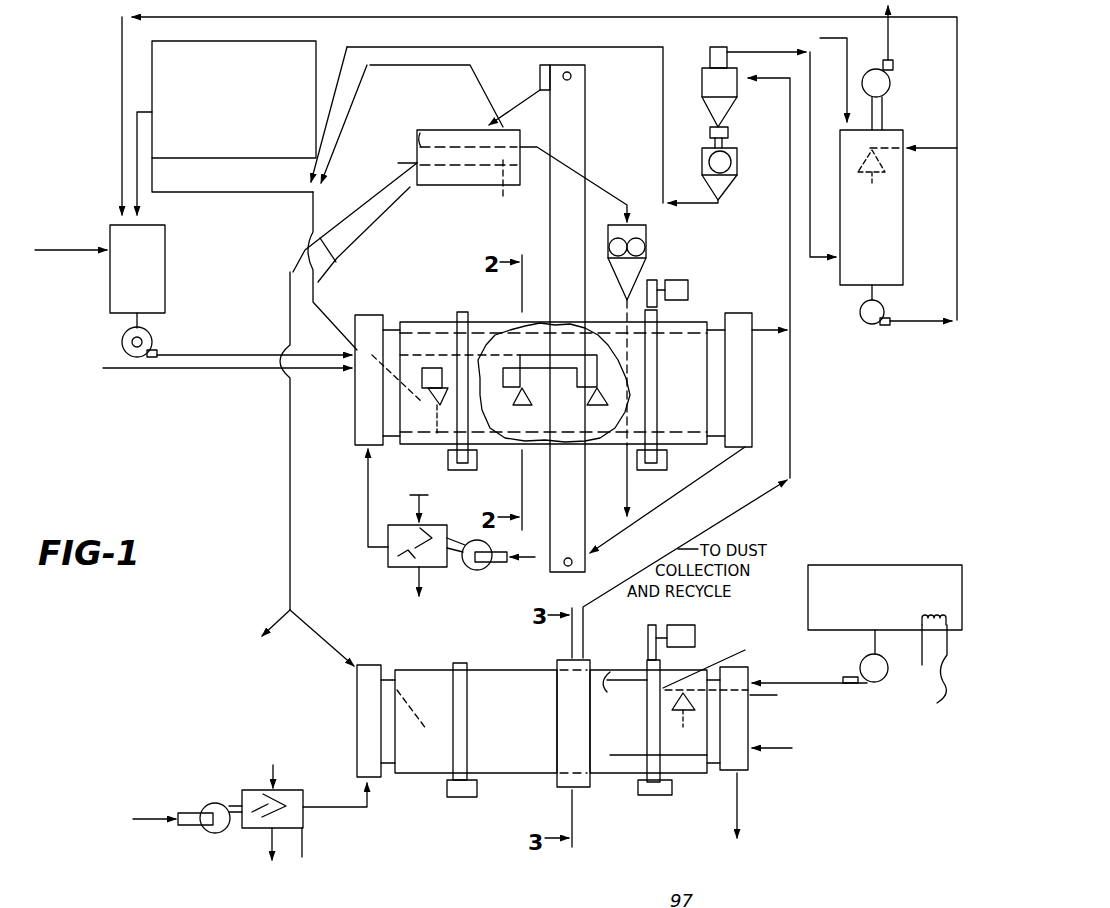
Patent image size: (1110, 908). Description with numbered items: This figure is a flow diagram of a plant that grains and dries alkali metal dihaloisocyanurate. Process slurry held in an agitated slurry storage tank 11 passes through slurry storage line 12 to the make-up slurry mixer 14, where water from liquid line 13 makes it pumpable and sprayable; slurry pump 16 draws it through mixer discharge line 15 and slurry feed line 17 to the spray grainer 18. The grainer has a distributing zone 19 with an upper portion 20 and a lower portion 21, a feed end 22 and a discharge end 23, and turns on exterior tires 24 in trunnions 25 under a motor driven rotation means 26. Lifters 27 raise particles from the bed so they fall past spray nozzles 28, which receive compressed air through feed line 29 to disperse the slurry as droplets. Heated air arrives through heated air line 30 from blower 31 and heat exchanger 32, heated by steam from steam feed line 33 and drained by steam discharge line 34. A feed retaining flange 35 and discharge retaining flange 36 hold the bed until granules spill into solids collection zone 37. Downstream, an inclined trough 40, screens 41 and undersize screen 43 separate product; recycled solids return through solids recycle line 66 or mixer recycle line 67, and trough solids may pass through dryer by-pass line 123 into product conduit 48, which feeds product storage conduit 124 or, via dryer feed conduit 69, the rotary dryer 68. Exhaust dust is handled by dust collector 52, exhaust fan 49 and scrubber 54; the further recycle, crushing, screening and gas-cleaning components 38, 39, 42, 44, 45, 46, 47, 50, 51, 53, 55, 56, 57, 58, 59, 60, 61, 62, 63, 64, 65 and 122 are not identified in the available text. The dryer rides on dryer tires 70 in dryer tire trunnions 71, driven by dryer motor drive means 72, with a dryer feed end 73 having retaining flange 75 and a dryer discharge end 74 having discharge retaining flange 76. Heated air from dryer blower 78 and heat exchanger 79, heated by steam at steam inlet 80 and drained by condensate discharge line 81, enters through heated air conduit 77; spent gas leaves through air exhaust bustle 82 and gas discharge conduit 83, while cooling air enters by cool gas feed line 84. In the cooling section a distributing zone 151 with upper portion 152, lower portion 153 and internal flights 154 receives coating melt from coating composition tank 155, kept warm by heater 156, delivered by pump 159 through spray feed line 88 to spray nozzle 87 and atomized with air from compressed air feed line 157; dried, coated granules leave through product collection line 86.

The agitated slurry storage tank 11 is at (187, 159).
The slurry storage line 12 is at (128, 118).
The liquid line 13 is at (72, 258).
The make-up slurry mixer 14 is at (140, 279).
The mixer discharge line 15 is at (132, 320).
The slurry pump 16 is at (153, 332).
The slurry feed line 17 is at (228, 352).
The spray grainer 18 is at (500, 322).
The distributing zone 19 is at (423, 325).
The upper portion 20 is at (585, 342).
The lower portion 21 is at (580, 447).
The feed end 22 is at (355, 432).
The discharge end 23 is at (752, 405).
The exterior tires 24 is at (463, 312).
The trunnions 25 is at (470, 470).
The motor driven rotation means 26 is at (688, 280).
The lifters 27 is at (410, 305).
The spray nozzles 28 is at (590, 400).
The compressed air or gas feed line 29 is at (304, 378).
The heated air line 30 is at (366, 516).
The blower 31 is at (470, 570).
The heat exchanger 32 is at (388, 567).
The steam feed line 33 is at (415, 500).
The steam discharge line 34 is at (418, 590).
The feed retaining flange 35 is at (425, 398).
The discharge retaining flange 36 is at (700, 432).
The solids collection zone 37 is at (740, 443).
The exhaust gas duct 38 is at (712, 474).
The discharge chute 39 is at (573, 520).
The inclined trough 40 is at (525, 98).
The screens 41 is at (446, 130).
The hopper inlet 42 is at (420, 132).
The undersize screen 43 is at (515, 189).
The feed conduit 44 is at (605, 183).
The feed rolls 45 is at (646, 236).
The feed discharge line 46 is at (627, 483).
The chute 47 is at (382, 218).
The product conduit 48 is at (330, 260).
The exhaust fan 49 is at (890, 78).
The exhaust outlet 50 is at (765, 332).
The exhaust line 51 is at (789, 250).
The dust collector 52 is at (740, 98).
The liquid line 53 is at (818, 260).
The scrubber 54 is at (840, 300).
The liquid feed line 55 is at (850, 68).
The scrubber outlet 56 is at (878, 293).
The pump 57 is at (868, 325).
The scrubber 58 is at (957, 245).
The gas inlet 59 is at (935, 150).
The spray nozzle 60 is at (869, 177).
The recirculation pipe 61 is at (885, 108).
The vent line 62 is at (890, 22).
The cyclone valve 63 is at (728, 133).
The rotary valve 64 is at (737, 162).
The fines return line 65 is at (716, 205).
The solids recycle line 66 is at (312, 218).
The mixer recycle line 67 is at (253, 193).
The rotary dryer 68 is at (507, 670).
The dryer feed conduit 69 is at (290, 578).
The dryer tires 70 is at (460, 663).
The dryer tire trunnions 71 is at (477, 793).
The dryer motor drive means 72 is at (695, 632).
The dryer feed end 73 is at (357, 706).
The dryer discharge end 74 is at (748, 670).
The retaining flange 75 is at (397, 760).
The discharge retaining flange 76 is at (714, 772).
The heated air conduit 77 is at (342, 808).
The dryer blower 78 is at (208, 833).
The heat exchanger 79 is at (315, 855).
The steam inlet 80 is at (268, 783).
The condensate discharge line 81 is at (262, 850).
The air exhaust bustle 82 is at (580, 788).
The gas discharge conduit 83 is at (584, 620).
The cool gas feed line 84 is at (772, 752).
The product collection line 86 is at (740, 810).
The spray nozzle 87 is at (706, 721).
The spray feed line 88 is at (818, 683).
The fines recycle line 122 is at (315, 55).
The dryer by-pass line 123 is at (360, 158).
The product storage conduit 124 is at (276, 618).
The distributing zone 151 is at (607, 670).
The upper portion 152 is at (720, 663).
The lower portion 153 is at (603, 745).
The internal flights 154 is at (628, 682).
The coating composition tank 155 is at (892, 563).
The heater 156 is at (929, 673).
The compressed air feed line 157 is at (762, 697).
The pump 159 is at (883, 680).